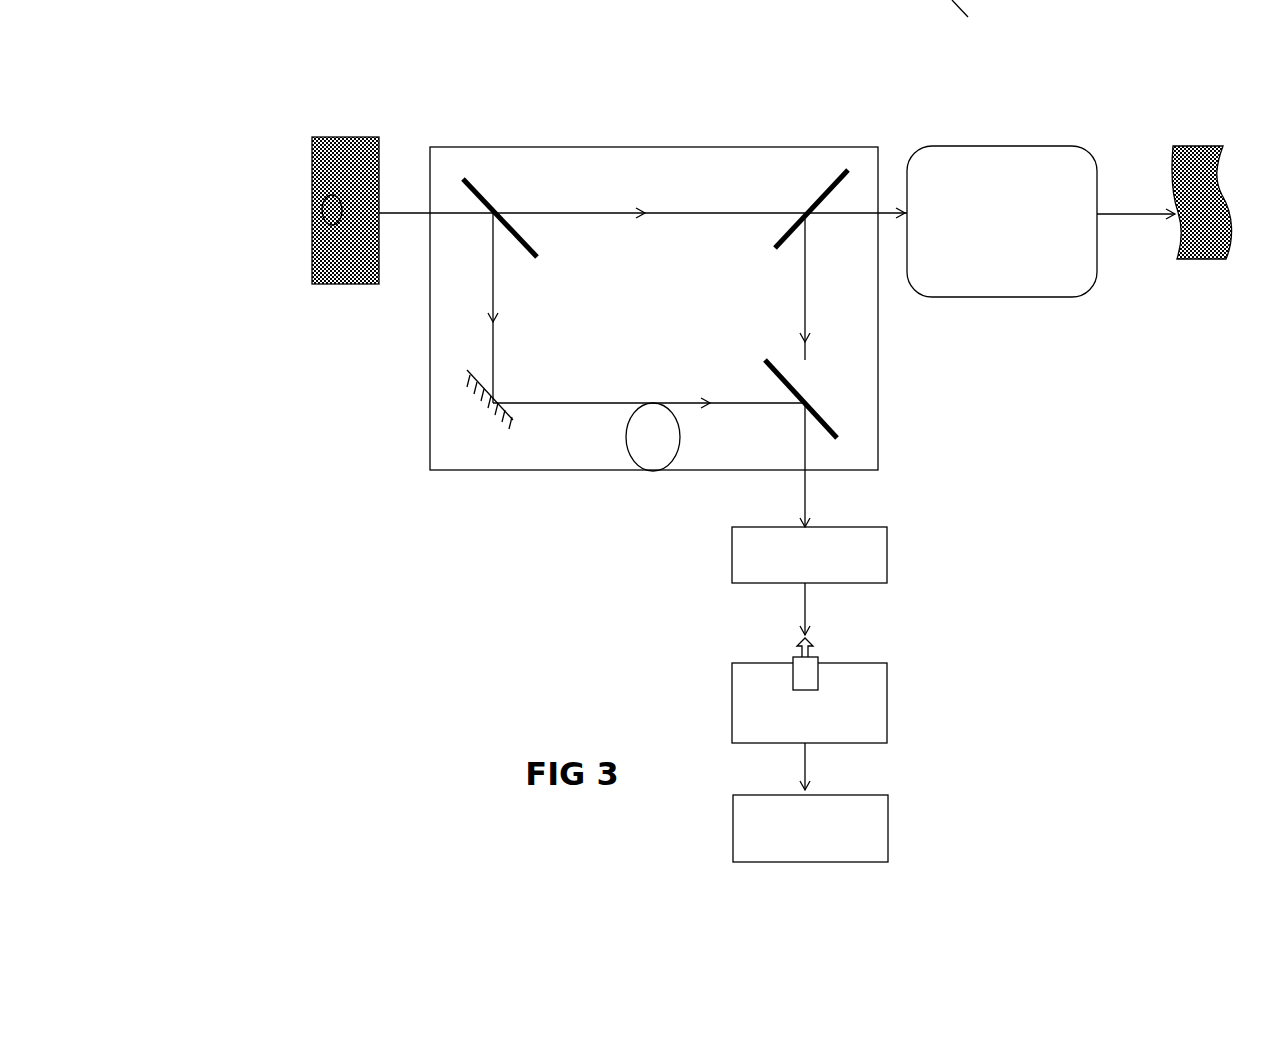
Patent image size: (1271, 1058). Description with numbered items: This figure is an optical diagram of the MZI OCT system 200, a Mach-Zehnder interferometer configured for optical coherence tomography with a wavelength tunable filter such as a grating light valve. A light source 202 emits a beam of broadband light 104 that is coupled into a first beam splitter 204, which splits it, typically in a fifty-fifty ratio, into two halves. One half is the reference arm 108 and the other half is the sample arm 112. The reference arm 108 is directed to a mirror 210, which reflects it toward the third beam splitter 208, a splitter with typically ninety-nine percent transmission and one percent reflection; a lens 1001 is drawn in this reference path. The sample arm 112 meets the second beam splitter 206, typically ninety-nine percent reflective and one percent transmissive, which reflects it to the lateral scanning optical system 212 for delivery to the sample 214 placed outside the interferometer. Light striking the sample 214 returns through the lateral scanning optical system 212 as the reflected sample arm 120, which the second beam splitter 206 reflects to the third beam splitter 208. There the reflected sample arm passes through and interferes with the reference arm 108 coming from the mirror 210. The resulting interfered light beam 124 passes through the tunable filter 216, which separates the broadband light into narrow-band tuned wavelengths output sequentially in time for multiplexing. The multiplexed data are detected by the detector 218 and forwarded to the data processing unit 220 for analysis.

The MZI OCT system 200 is at (1088, 88).
The light source 202 is at (298, 207).
The beam of broadband light 104 is at (410, 217).
The first beam splitter 204 is at (493, 205).
The sample arm 112 is at (638, 205).
The second beam splitter 206 is at (815, 193).
The lateral scanning optical system 212 is at (1003, 146).
The reflected sample arm 120 is at (1138, 213).
The sample 214 is at (1200, 259).
The reference arm 108 is at (483, 338).
The mirror 210 is at (473, 417).
The lens 1001 is at (660, 447).
The third beam splitter 208 is at (813, 405).
The interfered light beam 124 is at (805, 450).
The tunable filter 216 is at (887, 550).
The detector 218 is at (722, 683).
The data processing unit 220 is at (888, 830).